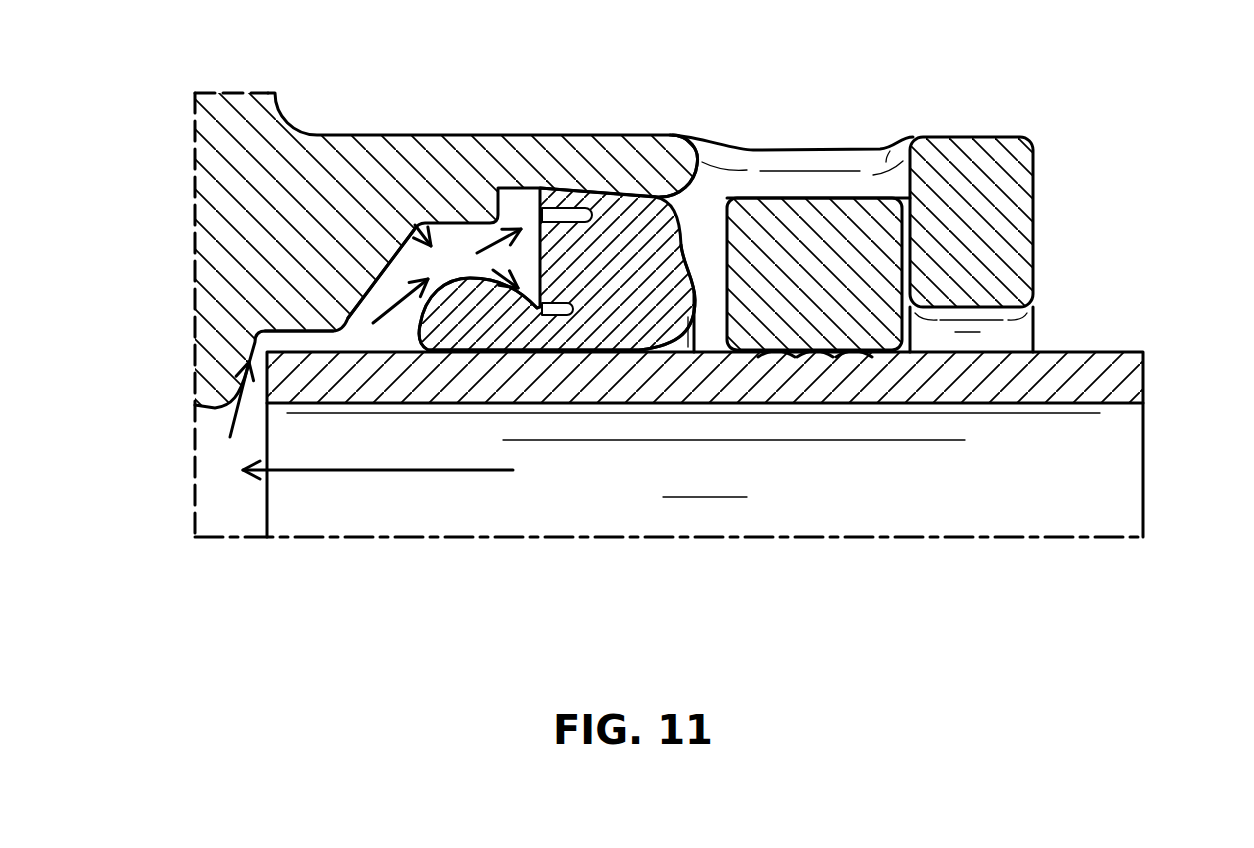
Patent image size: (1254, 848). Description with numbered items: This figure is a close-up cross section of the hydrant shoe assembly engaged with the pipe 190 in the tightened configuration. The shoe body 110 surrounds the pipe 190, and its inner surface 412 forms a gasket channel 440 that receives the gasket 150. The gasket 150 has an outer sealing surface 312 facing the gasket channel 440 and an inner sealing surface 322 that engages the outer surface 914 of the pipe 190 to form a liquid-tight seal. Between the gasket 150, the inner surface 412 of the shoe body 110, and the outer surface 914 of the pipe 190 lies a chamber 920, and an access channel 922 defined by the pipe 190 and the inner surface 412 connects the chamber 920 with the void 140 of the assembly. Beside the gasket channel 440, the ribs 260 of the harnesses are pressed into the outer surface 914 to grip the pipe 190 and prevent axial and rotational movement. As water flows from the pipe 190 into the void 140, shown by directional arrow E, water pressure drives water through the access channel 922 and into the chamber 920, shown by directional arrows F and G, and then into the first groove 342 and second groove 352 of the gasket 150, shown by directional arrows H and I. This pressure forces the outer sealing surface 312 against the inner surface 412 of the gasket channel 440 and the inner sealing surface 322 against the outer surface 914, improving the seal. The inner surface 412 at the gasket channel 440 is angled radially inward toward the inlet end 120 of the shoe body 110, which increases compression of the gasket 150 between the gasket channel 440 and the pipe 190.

The shoe body 110 is at (195, 163).
The inlet end 120 is at (1038, 183).
The void 140 is at (214, 497).
The gasket 150 is at (700, 222).
The pipe 190 is at (1132, 379).
The ribs 260 is at (758, 354).
The outer sealing surface 312 is at (623, 193).
The inner sealing surface 322 is at (470, 282).
The first groove 342 is at (568, 206).
The second groove 352 is at (559, 320).
The inner surface 412 is at (618, 207).
The gasket channel 440 is at (681, 146).
The outer surface 914 is at (196, 128).
The chamber 920 is at (393, 303).
The access channel 922 is at (274, 330).
The directional arrow E is at (334, 474).
The directional arrow F is at (235, 418).
The directional arrow G is at (350, 342).
The directional arrow H is at (516, 243).
The directional arrow I is at (480, 356).